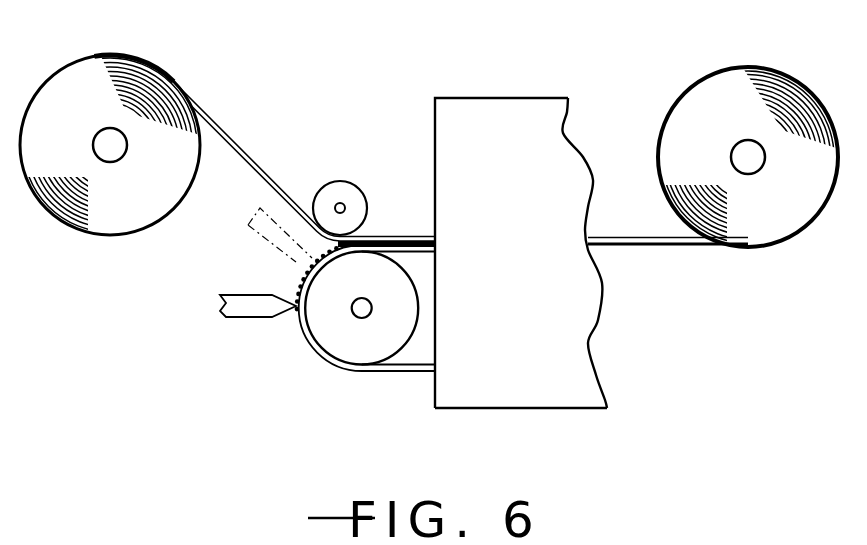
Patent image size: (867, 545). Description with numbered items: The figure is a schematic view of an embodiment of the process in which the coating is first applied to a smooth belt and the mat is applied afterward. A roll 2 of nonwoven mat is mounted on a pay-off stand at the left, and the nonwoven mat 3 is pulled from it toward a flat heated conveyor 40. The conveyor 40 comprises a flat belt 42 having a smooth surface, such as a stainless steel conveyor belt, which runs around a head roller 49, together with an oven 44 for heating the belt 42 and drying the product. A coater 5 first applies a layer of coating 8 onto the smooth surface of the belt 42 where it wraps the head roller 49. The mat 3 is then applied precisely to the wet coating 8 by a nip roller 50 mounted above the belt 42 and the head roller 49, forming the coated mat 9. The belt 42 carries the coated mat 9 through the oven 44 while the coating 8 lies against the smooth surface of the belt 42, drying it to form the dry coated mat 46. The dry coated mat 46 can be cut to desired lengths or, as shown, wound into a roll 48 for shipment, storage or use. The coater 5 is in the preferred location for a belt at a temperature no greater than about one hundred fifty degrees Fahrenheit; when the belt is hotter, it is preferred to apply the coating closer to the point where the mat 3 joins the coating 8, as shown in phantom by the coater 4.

The roll of nonwoven mat 2 is at (141, 83).
The nonwoven mat 3 is at (263, 170).
The coater (phantom) 4 is at (262, 224).
The coater 5 is at (242, 315).
The layer of coating 8 is at (298, 279).
The coated mat 9 is at (372, 235).
The flat heated conveyor 40 is at (458, 92).
The belt 42 is at (393, 373).
The oven 44 is at (528, 120).
The dry coated mat 46 is at (672, 247).
The roll 48 is at (775, 85).
The head roller 49 is at (353, 335).
The nip roller 50 is at (333, 193).